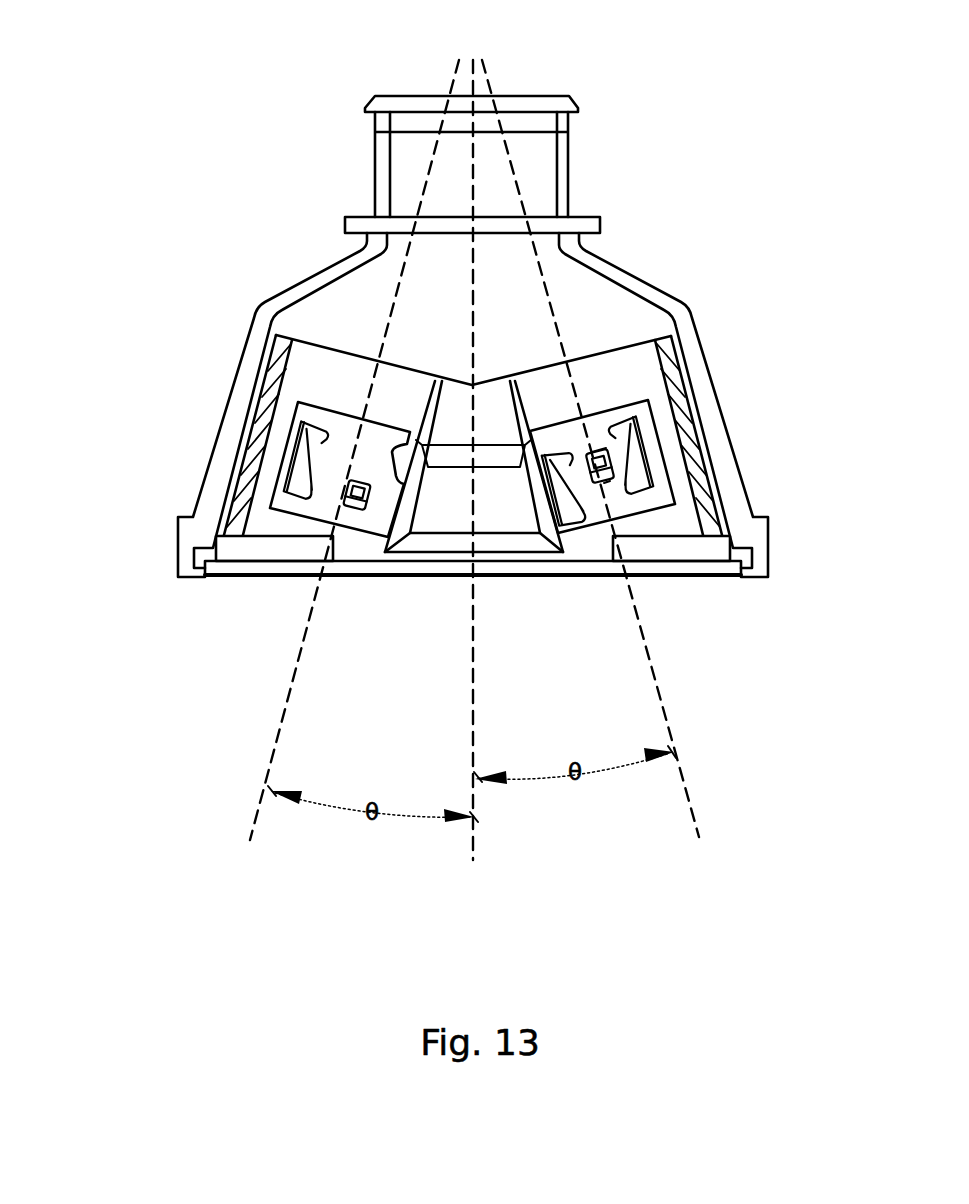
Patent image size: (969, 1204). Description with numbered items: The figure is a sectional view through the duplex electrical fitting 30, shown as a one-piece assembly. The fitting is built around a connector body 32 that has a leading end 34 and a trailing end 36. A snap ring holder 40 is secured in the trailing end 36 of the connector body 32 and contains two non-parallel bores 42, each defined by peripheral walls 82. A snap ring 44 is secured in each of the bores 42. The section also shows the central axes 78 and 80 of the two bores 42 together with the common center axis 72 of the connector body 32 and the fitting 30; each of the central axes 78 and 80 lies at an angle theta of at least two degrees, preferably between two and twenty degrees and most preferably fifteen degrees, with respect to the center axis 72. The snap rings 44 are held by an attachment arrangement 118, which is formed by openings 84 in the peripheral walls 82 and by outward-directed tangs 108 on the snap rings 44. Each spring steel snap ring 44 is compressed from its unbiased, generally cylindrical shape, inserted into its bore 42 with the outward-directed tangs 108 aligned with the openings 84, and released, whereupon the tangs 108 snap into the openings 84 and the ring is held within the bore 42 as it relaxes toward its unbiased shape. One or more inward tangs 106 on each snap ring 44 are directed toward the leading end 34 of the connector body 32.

The duplex electrical fitting 30 is at (170, 198).
The connector body 32 is at (628, 268).
The leading end 34 is at (520, 97).
The trailing end 36 is at (490, 578).
The snap ring holder 40 is at (621, 386).
The non-parallel bores 42 is at (318, 528).
The snap ring 44 is at (334, 439).
The center axis 72 is at (476, 800).
The central axis 78 is at (280, 735).
The central axis 80 is at (673, 735).
The peripheral walls 82 is at (262, 420).
The openings 84 is at (607, 487).
The inward tangs 106 is at (308, 470).
The outward-directed tangs 108 is at (588, 458).
The attachment arrangement 118 is at (598, 432).